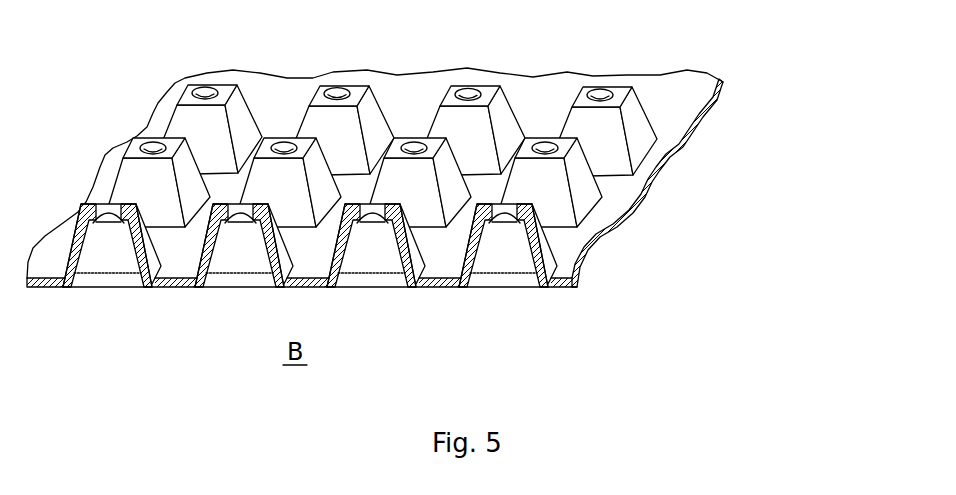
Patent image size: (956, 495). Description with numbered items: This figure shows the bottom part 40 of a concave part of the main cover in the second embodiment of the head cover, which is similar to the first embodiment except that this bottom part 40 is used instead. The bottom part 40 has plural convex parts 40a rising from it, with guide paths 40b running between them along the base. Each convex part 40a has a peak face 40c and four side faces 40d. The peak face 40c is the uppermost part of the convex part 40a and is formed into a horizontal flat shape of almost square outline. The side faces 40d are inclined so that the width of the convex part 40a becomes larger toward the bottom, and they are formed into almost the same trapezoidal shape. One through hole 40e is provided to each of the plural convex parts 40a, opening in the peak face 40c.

The bottom part 40 is at (422, 145).
The convex part 40a is at (646, 95).
The guide path 40b is at (567, 243).
The peak face 40c is at (620, 92).
The side face 40d is at (640, 127).
The through hole 40e is at (590, 95).